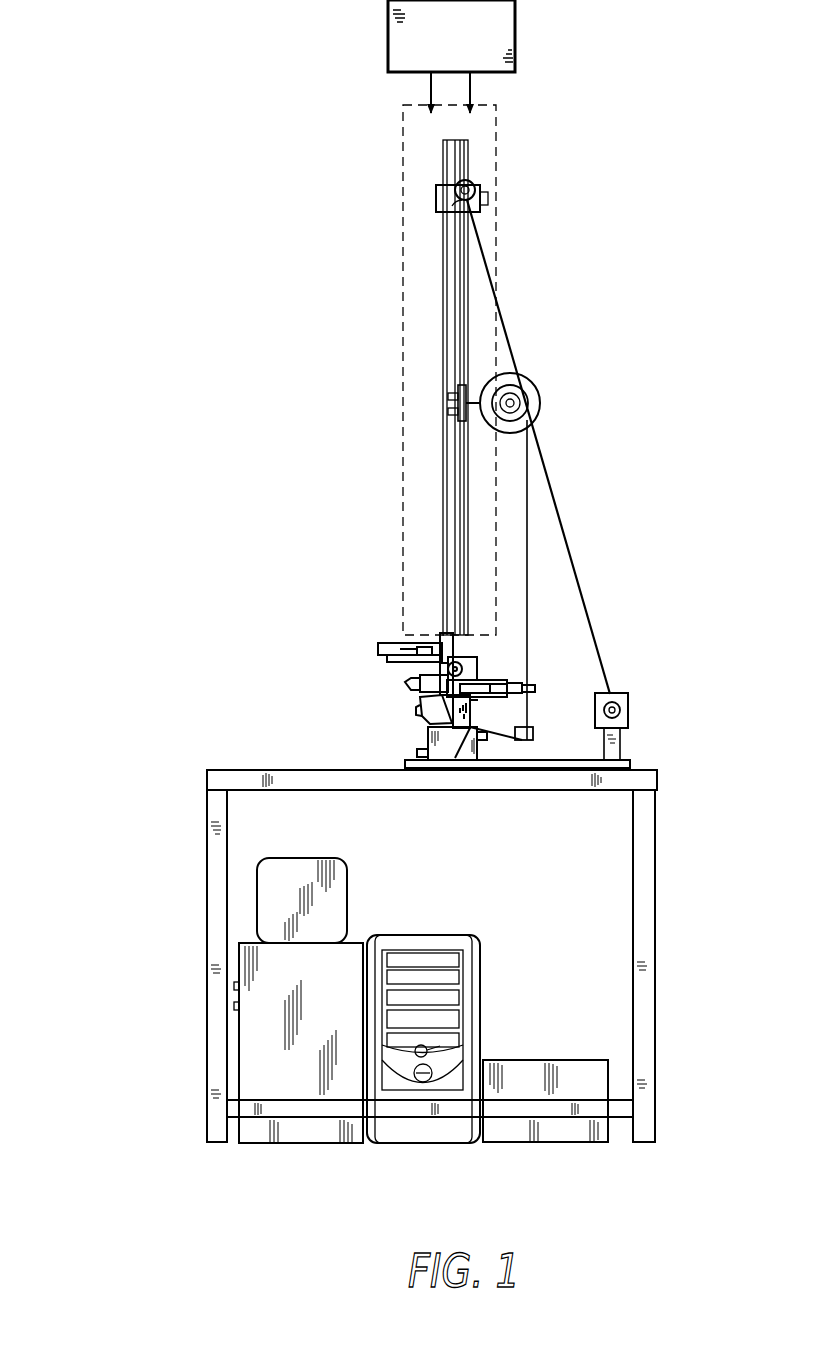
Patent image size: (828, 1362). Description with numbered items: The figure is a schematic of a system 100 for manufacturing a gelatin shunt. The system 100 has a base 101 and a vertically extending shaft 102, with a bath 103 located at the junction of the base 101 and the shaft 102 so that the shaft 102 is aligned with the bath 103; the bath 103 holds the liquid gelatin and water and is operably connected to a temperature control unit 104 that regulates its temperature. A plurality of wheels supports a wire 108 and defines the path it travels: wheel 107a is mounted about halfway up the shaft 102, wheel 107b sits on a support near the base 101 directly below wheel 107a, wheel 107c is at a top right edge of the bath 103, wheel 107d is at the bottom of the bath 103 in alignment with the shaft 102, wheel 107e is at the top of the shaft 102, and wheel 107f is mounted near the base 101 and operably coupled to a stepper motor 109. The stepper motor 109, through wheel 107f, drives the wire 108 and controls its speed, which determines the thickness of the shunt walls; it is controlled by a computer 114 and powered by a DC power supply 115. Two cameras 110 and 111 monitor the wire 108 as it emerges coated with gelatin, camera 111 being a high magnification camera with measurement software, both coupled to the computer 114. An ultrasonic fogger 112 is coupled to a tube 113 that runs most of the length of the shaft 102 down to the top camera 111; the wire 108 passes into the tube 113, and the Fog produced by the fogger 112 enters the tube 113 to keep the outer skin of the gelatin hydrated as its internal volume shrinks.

The system 100 is at (138, 212).
The base 101 is at (620, 762).
The vertically extending shaft 102 is at (443, 295).
The bath 103 is at (423, 745).
The temperature control unit 104 is at (257, 890).
The wheel 107a is at (532, 381).
The wheel 107b is at (555, 740).
The wheel 107c is at (482, 760).
The wheel 107d is at (458, 760).
The wheel 107e is at (478, 182).
The wheel 107f is at (620, 712).
The wire 108 is at (513, 315).
The stepper motor 109 is at (625, 685).
The camera 110 is at (413, 710).
The camera 111 is at (403, 682).
The ultrasonic fogger 112 is at (474, 52).
The tube 113 is at (403, 192).
The computer 114 is at (420, 1145).
The DC power supply 115 is at (588, 1145).
The fog flow Fog is at (470, 90).